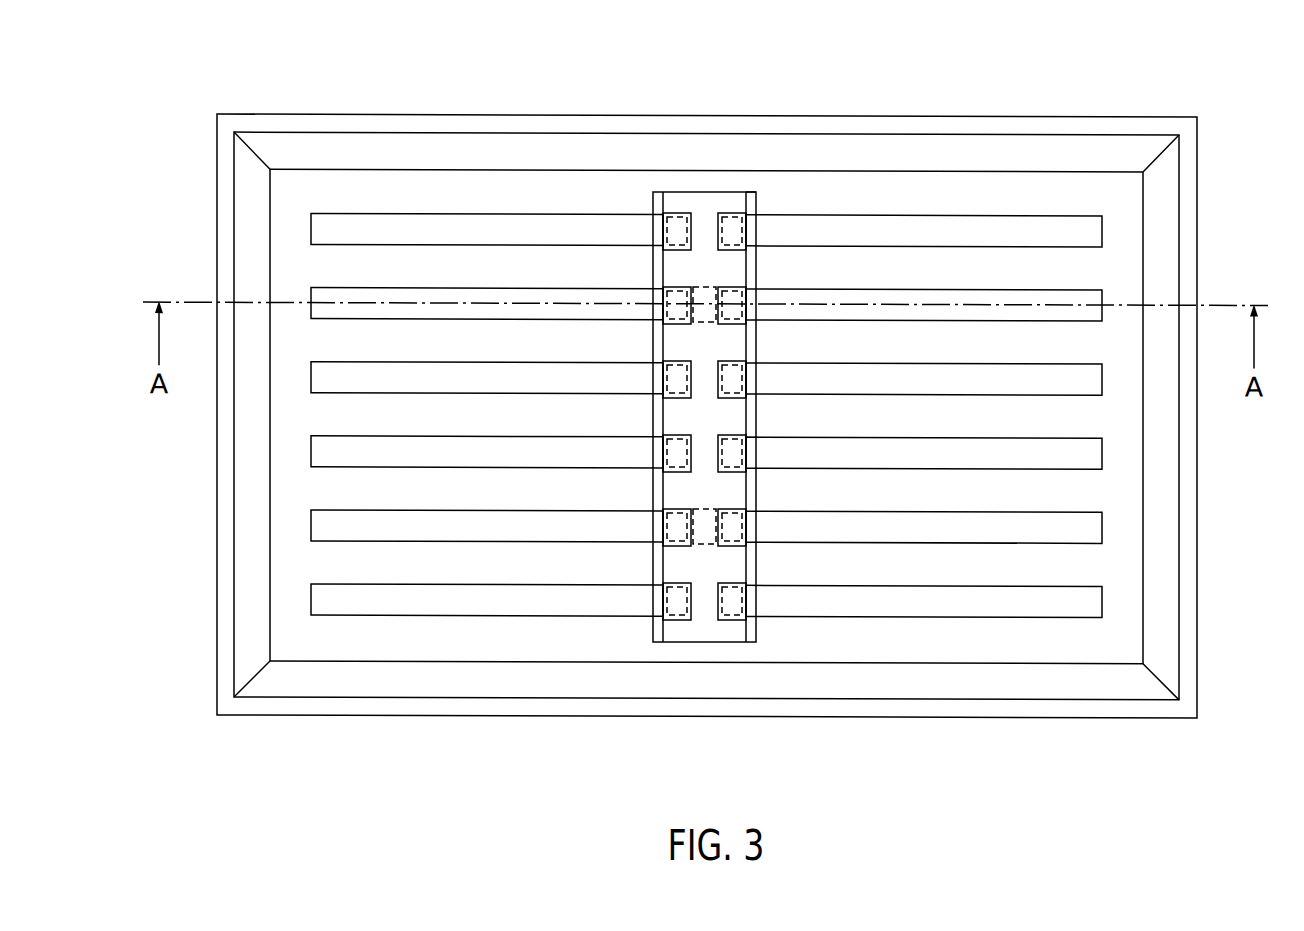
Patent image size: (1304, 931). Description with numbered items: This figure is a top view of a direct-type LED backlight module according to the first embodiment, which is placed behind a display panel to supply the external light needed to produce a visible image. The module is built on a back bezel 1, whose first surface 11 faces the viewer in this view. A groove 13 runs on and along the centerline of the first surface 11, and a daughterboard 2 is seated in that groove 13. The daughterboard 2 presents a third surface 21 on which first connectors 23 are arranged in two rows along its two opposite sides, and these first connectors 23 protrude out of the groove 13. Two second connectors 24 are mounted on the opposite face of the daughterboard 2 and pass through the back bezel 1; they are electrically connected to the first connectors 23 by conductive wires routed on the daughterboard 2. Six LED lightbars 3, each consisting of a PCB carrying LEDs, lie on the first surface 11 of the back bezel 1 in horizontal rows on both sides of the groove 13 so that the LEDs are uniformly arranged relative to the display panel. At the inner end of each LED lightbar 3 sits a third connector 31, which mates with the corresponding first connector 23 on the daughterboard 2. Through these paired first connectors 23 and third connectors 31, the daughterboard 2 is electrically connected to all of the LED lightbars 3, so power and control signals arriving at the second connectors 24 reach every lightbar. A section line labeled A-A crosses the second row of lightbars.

The back bezel 1 is at (1197, 187).
The first surface 11 is at (952, 195).
The groove 13 is at (755, 207).
The daughterboard 2 is at (663, 630).
The third surface 21 is at (673, 627).
The first connectors 23 is at (677, 623).
The second connectors 24 is at (706, 287).
The LED lightbars 3 is at (531, 600).
The third connector 31 is at (675, 603).